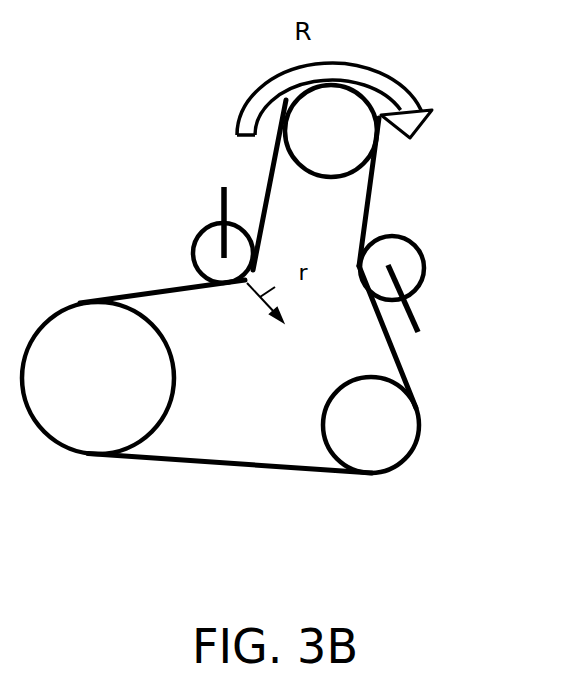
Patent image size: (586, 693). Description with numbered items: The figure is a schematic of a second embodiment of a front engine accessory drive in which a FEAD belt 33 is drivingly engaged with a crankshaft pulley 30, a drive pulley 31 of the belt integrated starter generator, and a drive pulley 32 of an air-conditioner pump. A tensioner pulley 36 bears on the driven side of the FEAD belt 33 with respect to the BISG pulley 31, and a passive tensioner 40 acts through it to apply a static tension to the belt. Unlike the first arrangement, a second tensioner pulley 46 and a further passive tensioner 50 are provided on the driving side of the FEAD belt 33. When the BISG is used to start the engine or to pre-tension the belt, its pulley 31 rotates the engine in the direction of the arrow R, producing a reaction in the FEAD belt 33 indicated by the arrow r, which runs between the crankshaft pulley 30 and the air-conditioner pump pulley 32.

The crankshaft pulley 30 is at (165, 397).
The drive pulley of the BISG 31 is at (298, 173).
The drive pulley of an air-conditioner pump 32 is at (322, 413).
The FEAD belt 33 is at (180, 462).
The tensioner pulley 36 is at (192, 257).
The passive tensioner 40 is at (220, 203).
The second tensioner pulley 46 is at (397, 235).
The passive tensioner 50 is at (418, 317).